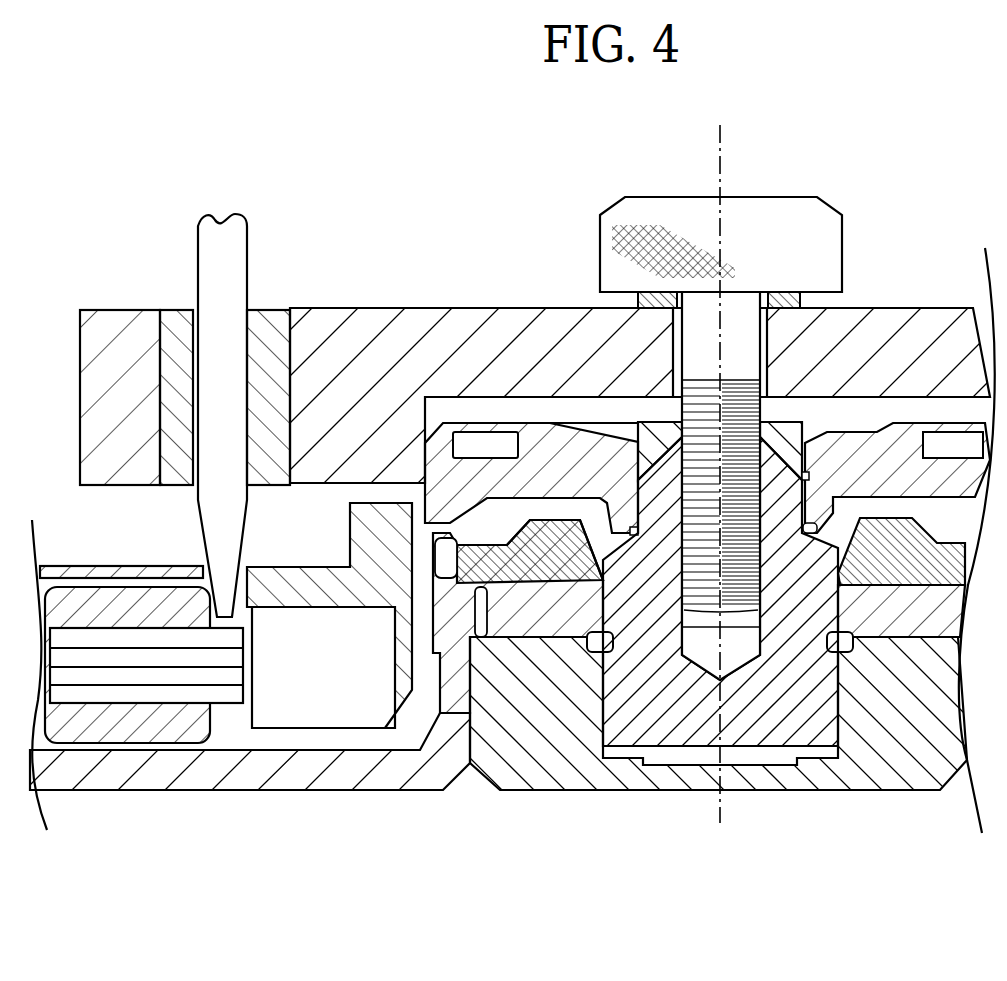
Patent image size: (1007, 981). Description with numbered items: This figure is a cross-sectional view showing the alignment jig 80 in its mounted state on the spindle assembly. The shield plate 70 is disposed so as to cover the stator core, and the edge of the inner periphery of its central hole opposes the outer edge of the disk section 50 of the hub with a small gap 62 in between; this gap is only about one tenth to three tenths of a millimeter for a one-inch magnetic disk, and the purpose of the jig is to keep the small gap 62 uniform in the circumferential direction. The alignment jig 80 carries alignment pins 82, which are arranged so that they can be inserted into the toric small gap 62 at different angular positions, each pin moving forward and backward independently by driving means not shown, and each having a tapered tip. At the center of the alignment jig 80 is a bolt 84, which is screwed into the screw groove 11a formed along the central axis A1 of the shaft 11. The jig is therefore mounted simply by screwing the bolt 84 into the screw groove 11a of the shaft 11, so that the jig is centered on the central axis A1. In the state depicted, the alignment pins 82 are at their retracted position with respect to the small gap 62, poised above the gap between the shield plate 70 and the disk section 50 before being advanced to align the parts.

The alignment jig 80 is at (431, 208).
The alignment pins 82 is at (225, 268).
The disk section 50 is at (318, 575).
The bolt 84 is at (842, 238).
The central axis A1 is at (722, 150).
The shield plate 70 is at (127, 568).
The small gap 62 is at (252, 565).
The shaft 11 is at (817, 730).
The screw groove 11a is at (753, 608).